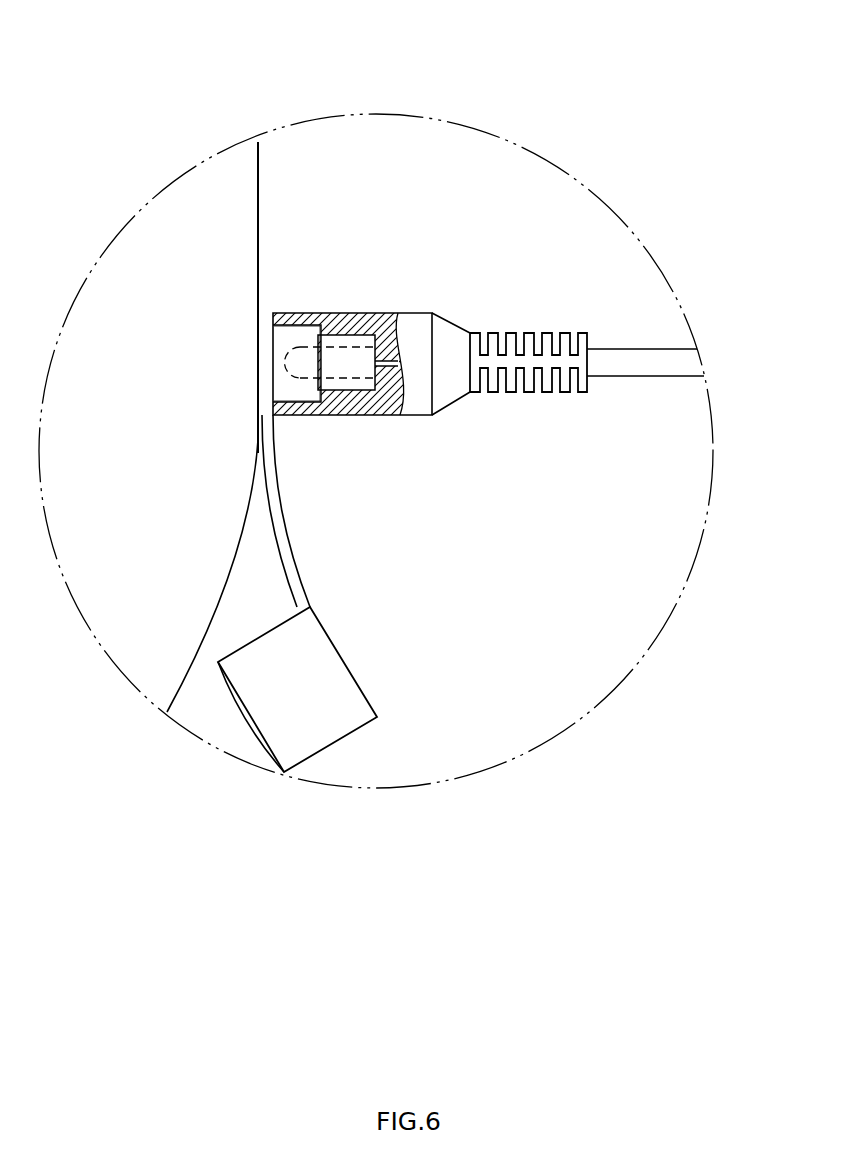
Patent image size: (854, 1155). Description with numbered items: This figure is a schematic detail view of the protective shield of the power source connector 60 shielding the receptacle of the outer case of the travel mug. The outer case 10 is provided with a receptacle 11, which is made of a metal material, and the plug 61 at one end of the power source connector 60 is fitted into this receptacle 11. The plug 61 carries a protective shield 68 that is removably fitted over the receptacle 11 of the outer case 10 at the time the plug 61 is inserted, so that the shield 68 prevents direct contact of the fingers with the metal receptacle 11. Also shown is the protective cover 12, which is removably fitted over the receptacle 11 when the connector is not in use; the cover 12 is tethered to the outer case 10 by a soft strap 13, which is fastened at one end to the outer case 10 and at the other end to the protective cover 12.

The outer case 10 is at (258, 172).
The protective shield 68 is at (310, 313).
The plug 61 is at (340, 353).
The receptacle 11 is at (305, 392).
The power source connector 60 is at (647, 353).
The soft strap 13 is at (295, 573).
The protective cover 12 is at (342, 700).